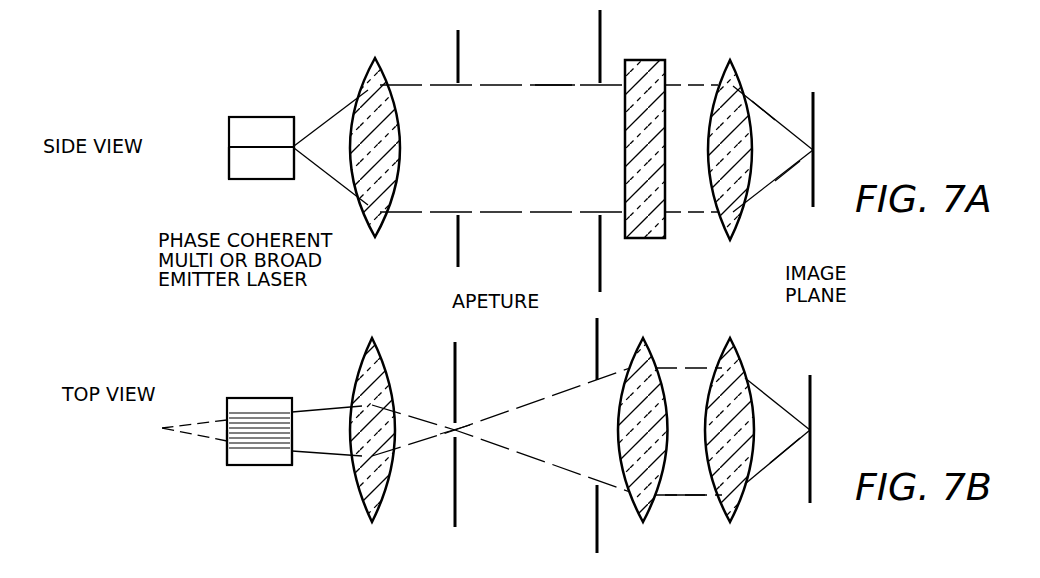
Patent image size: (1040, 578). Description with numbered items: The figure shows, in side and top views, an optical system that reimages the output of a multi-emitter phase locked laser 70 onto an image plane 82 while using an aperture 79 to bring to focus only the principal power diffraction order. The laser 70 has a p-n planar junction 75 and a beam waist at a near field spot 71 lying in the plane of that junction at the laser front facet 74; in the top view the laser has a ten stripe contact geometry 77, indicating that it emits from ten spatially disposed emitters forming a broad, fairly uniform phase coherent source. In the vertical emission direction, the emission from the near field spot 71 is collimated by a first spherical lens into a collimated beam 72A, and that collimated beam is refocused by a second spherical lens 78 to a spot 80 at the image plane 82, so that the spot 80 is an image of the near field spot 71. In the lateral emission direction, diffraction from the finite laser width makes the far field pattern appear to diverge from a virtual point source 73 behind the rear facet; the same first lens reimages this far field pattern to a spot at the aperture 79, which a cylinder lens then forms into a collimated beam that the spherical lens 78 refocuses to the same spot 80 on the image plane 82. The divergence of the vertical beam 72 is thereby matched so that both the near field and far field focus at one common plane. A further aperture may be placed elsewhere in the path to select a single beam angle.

In FIG. 7A, the multi-emitter phase locked laser 70 is at (233, 105).
In FIG. 7B, the multi-emitter phase locked laser 70 is at (228, 388).
In FIG. 7A, the beam waist position 71 is at (296, 143).
In FIG. 7A, the beam 72 is at (775, 118).
In FIG. 7A, the collimated beam 72A is at (552, 84).
In FIG. 7B, the virtual point source 73 is at (160, 430).
In FIG. 7A, the laser front facet 74 is at (294, 165).
In FIG. 7B, the laser front facet 74 is at (292, 450).
In FIG. 7A, the p-n planar junction 75 is at (248, 148).
In FIG. 7B, the ten stripe contact geometry 77 is at (256, 408).
In FIG. 7A, the spherical lens 78 is at (742, 78).
In FIG. 7B, the spherical lens 78 is at (740, 354).
In FIG. 7A, the aperture 79 is at (460, 83).
In FIG. 7B, the aperture 79 is at (460, 426).
In FIG. 7A, the spot 80 is at (800, 160).
In FIG. 7B, the spot 80 is at (798, 440).
In FIG. 7A, the image plane 82 is at (814, 117).
In FIG. 7B, the image plane 82 is at (812, 390).